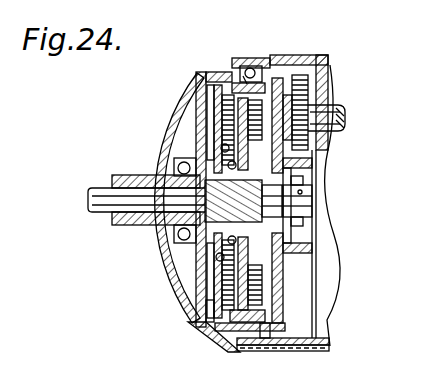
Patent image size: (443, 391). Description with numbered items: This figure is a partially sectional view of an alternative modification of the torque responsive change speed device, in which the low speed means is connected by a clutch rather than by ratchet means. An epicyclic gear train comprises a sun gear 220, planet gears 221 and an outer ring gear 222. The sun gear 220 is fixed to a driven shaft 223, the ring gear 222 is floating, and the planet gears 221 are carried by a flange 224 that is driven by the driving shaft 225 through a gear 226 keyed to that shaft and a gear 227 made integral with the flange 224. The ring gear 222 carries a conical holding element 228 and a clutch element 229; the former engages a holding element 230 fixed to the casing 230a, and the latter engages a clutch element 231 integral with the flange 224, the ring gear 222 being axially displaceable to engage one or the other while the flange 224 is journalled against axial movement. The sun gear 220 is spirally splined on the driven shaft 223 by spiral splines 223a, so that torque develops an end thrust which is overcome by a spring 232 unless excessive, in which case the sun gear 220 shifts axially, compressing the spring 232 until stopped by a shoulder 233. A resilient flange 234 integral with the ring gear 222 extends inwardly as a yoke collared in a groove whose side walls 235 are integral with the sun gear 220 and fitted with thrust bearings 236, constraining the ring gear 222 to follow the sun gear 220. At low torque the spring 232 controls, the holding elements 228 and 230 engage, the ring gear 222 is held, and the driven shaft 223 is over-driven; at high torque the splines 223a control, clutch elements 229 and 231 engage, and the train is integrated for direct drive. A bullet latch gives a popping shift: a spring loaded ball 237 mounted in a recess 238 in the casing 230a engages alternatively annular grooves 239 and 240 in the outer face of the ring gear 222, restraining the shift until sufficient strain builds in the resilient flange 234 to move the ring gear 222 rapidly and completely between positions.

The sun gear 220 is at (318, 272).
The planet gears 221 is at (200, 102).
The outer ring gear 222 is at (190, 92).
The driven shaft 223 is at (96, 198).
The spiral splines 223a is at (316, 194).
The flange 224 is at (312, 82).
The driving shaft 225 is at (345, 120).
The gear 226 is at (313, 100).
The gear 227 is at (316, 242).
The conical holding element 228 is at (242, 345).
The clutch element 229 is at (318, 325).
The holding element 230 is at (222, 335).
The casing 230a is at (190, 305).
The clutch element 231 is at (292, 350).
The spring 232 is at (316, 218).
The shoulder 233 is at (314, 182).
The resilient flange 234 is at (175, 125).
The side walls 235 is at (178, 163).
The thrust bearings 236 is at (175, 212).
The spring loaded ball 237 is at (268, 70).
The recess 238 is at (260, 68).
The annular groove 239 is at (243, 76).
The annular groove 240 is at (265, 338).